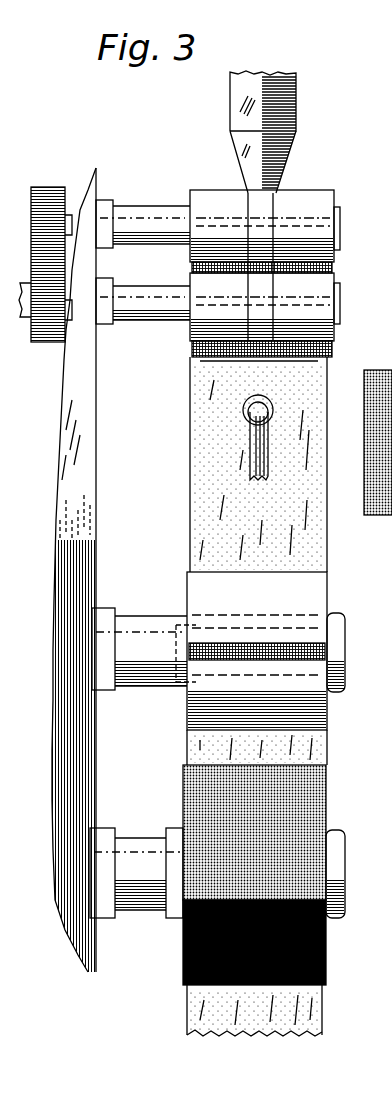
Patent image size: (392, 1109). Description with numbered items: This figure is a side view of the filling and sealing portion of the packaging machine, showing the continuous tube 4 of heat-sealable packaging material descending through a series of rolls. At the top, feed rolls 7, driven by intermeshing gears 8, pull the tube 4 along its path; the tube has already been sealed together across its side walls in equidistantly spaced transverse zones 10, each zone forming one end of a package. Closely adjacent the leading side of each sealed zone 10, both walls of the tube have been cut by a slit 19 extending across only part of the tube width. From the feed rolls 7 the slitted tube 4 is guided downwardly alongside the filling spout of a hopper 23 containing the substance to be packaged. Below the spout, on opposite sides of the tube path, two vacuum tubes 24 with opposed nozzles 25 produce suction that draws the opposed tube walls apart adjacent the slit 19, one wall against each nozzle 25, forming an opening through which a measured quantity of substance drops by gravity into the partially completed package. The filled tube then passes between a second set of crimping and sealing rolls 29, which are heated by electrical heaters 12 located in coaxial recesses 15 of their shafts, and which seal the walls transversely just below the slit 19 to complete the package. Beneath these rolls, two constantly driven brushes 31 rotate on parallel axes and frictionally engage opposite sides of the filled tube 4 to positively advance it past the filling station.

The continuous tube 4 is at (334, 268).
The feed rolls 7 is at (320, 200).
The intermeshing gears 8 is at (45, 188).
The transverse zones 10 is at (190, 350).
The electrical heaters 12 is at (305, 632).
The coaxial recesses 15 is at (188, 630).
The slit 19 is at (205, 362).
The hopper 23 is at (296, 108).
The vacuum tubes 24 is at (252, 460).
The nozzles 25 is at (245, 412).
The second set of crimping and sealing rolls 29 is at (200, 582).
The brushes 31 is at (190, 795).